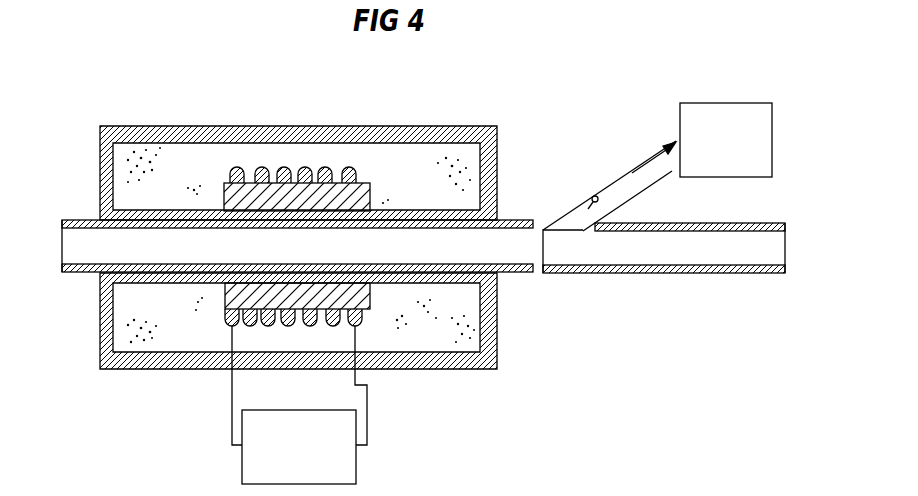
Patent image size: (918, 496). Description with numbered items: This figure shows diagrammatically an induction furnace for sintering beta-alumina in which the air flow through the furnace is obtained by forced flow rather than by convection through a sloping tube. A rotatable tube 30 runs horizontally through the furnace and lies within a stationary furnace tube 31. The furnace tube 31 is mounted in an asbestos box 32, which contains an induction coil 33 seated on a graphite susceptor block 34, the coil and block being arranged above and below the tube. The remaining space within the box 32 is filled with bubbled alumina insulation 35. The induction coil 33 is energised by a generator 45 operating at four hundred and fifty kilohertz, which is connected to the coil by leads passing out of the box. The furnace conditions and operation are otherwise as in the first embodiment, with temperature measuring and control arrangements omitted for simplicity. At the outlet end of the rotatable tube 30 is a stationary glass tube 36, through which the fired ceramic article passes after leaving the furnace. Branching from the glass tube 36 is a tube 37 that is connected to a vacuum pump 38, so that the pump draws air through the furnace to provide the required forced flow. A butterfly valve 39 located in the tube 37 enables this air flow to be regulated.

The rotatable tube 30 is at (72, 220).
The stationary furnace tube 31 is at (401, 213).
The asbestos box 32 is at (418, 362).
The induction coil 33 is at (284, 167).
The graphite susceptor block 34 is at (228, 300).
The bubbled alumina insulation 35 is at (468, 333).
The stationary glass tube 36 is at (653, 273).
The tube 37 is at (618, 191).
The vacuum pump 38 is at (717, 108).
The butterfly valve 39 is at (585, 205).
The 450 kHz generator 45 is at (356, 455).